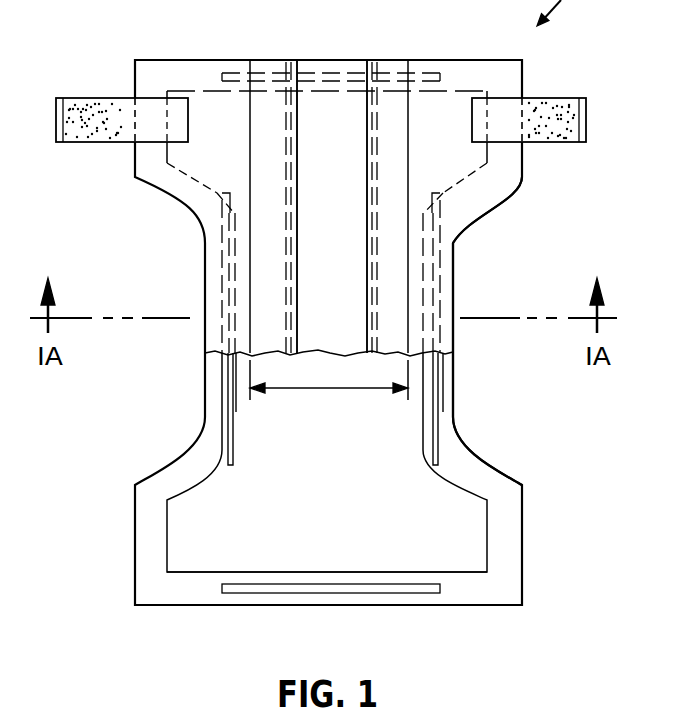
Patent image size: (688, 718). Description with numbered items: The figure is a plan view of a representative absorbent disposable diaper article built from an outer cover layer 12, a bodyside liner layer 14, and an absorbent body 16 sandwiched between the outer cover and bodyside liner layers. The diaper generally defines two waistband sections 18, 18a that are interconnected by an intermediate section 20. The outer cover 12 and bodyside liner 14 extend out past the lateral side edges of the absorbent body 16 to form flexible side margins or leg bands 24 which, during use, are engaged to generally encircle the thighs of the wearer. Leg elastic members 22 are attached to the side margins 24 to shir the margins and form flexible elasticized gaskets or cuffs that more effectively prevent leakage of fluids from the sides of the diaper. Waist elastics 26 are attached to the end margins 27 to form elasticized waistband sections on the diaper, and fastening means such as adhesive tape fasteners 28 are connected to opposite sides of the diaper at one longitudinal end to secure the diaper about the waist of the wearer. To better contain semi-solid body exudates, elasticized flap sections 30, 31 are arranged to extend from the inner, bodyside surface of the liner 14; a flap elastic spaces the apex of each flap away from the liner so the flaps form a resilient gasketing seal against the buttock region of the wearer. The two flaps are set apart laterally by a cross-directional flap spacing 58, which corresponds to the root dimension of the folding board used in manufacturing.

The outer cover layer 12 is at (470, 466).
The bodyside liner layer 14 is at (462, 204).
The absorbent body 16 is at (341, 490).
The waistband section 18 is at (218, 60).
The waistband section 18a is at (221, 607).
The intermediate section 20 is at (453, 283).
The leg elastic member 22 is at (227, 409).
The side margin 24 is at (211, 381).
The waist elastic 26 is at (402, 70).
The end margin 27 is at (466, 72).
The adhesive tape fastener 28 is at (90, 100).
The elasticized flap section 30 is at (294, 170).
The elasticized flap section 31 is at (366, 232).
The cross-directional flap spacing 58 is at (350, 391).